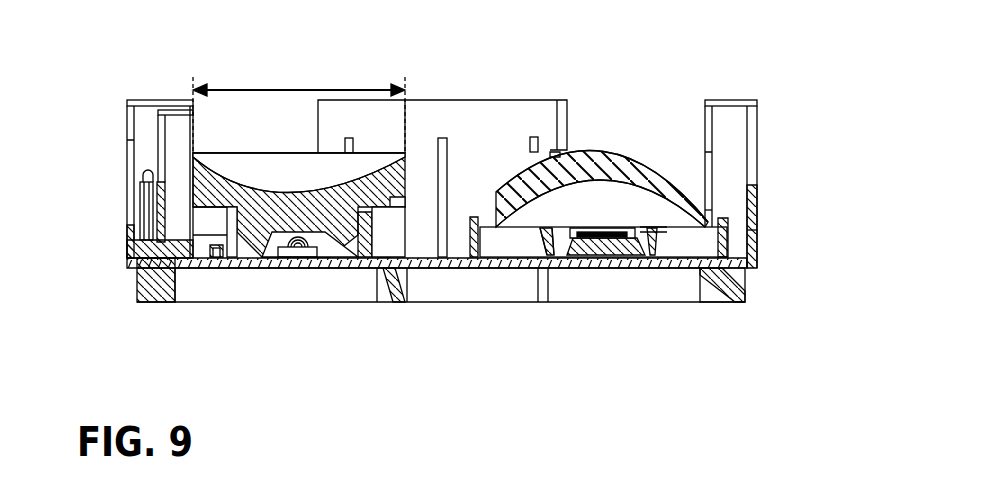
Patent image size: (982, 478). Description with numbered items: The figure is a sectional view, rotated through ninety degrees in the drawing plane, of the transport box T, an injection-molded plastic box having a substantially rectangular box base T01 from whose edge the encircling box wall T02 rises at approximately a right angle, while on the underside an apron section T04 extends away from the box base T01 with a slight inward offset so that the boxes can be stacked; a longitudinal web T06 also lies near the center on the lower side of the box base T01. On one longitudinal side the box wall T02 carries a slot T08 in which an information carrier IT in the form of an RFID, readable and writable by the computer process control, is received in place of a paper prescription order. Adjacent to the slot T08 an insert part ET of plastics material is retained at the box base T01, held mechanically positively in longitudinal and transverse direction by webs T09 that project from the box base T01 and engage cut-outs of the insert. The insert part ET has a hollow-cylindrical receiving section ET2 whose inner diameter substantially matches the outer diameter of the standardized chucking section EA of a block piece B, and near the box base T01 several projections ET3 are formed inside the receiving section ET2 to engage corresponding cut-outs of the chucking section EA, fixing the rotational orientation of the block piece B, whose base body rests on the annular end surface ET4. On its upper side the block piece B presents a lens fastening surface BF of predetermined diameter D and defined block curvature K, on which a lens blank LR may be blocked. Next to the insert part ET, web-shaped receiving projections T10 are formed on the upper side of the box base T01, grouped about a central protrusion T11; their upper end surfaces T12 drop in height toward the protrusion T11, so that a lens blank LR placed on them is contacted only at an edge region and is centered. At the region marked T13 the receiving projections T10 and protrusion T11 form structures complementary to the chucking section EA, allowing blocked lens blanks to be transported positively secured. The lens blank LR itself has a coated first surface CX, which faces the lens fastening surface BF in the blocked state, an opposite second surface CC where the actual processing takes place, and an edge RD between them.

The transport box T is at (764, 76).
The predetermined diameter D is at (262, 90).
The block curvature K is at (278, 190).
The block piece B is at (402, 157).
The lens fastening surface BF is at (330, 190).
The annular end surface ET4 is at (231, 207).
The insert part ET is at (230, 254).
The receiving section ET2 is at (218, 228).
The projection ET3 is at (298, 256).
The web T09 is at (217, 251).
The chucking section EA is at (360, 234).
The information carrier IT is at (147, 190).
The slot T08 is at (139, 225).
The apron section T04 is at (146, 272).
The lens blank LR is at (633, 150).
The first surface CX is at (568, 158).
The second surface CC is at (553, 188).
The edge RD is at (493, 207).
The upper end surface T12 is at (509, 226).
The central protrusion T11 is at (576, 246).
The complementary structures T13 is at (645, 231).
The receiving projection T10 is at (708, 222).
The box wall T02 is at (753, 237).
The box base T01 is at (458, 265).
The longitudinal web T06 is at (396, 283).